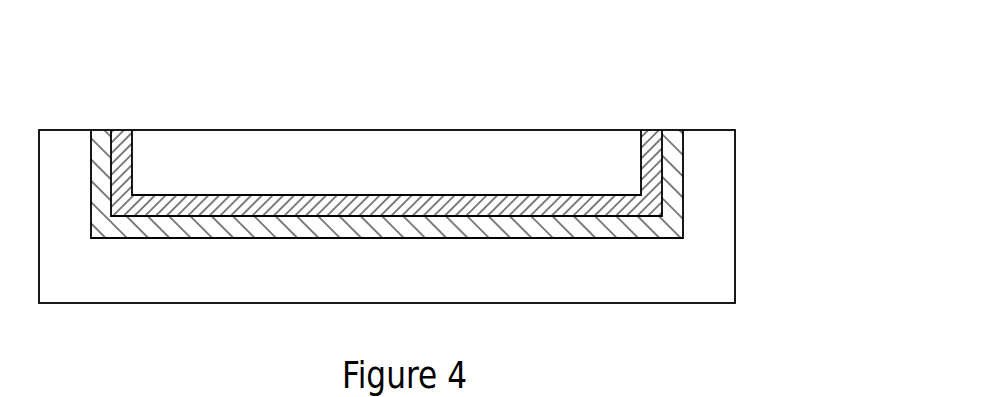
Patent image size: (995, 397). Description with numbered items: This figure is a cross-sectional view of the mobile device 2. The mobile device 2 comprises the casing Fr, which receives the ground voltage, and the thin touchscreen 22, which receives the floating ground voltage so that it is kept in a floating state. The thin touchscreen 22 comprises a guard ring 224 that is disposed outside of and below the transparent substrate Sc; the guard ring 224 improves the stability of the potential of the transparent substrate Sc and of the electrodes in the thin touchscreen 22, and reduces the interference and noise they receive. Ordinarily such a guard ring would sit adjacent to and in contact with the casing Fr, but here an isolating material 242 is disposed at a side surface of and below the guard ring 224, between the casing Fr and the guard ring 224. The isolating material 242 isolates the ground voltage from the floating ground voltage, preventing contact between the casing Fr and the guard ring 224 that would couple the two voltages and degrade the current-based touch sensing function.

The mobile device 2 is at (657, 43).
The thin touchscreen 22 is at (685, 141).
The guard ring 224 is at (677, 168).
The isolating material 242 is at (675, 192).
The transparent substrate Sc is at (592, 169).
The casing Fr is at (387, 216).